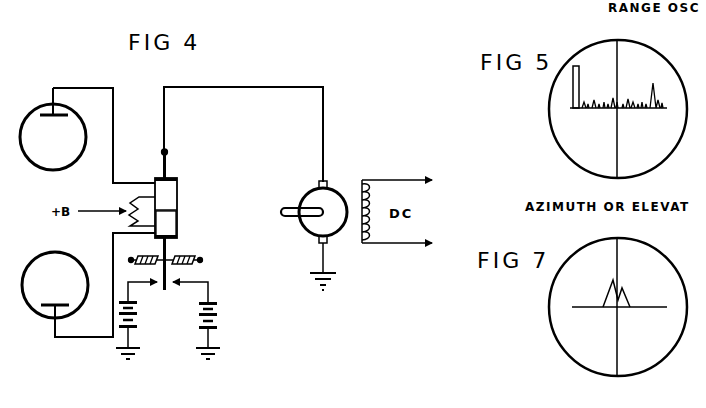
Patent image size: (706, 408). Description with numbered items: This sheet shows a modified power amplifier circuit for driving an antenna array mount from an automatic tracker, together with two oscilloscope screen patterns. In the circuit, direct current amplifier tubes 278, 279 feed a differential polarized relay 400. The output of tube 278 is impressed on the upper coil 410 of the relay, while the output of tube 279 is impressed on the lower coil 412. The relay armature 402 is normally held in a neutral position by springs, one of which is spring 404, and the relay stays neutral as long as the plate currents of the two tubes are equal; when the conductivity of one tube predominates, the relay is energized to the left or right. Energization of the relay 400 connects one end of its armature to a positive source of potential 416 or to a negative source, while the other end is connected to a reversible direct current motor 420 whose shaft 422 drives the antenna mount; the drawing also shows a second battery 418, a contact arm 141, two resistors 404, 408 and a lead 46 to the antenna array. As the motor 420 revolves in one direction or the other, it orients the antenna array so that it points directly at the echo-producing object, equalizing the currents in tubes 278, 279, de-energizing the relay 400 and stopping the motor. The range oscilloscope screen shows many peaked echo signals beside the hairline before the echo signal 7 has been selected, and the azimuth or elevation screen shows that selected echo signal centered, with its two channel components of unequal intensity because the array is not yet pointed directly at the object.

In FIG. 4, the direct current amplifier tube 278 is at (51, 106).
In FIG. 4, the direct current amplifier tube 279 is at (49, 318).
In FIG. 4, the differential polarized relay 400 is at (159, 178).
In FIG. 4, the armature 402 is at (169, 164).
In FIG. 4, the upper coil 410 is at (178, 194).
In FIG. 4, the lower coil 412 is at (178, 221).
In FIG. 4, the spring 404 is at (143, 257).
In FIG. 4, the resistor 408 is at (198, 253).
In FIG. 4, the contact arm 141 is at (168, 275).
In FIG. 4, the positive source of potential 416 is at (218, 323).
In FIG. 4, the battery 418 is at (137, 328).
In FIG. 4, the reversible direct current motor 420 is at (334, 192).
In FIG. 4, the shaft 422 is at (292, 223).
In FIG. 4, the lead to antenna array 46 is at (290, 207).
In FIG. 5, the echo signal 7 is at (656, 86).